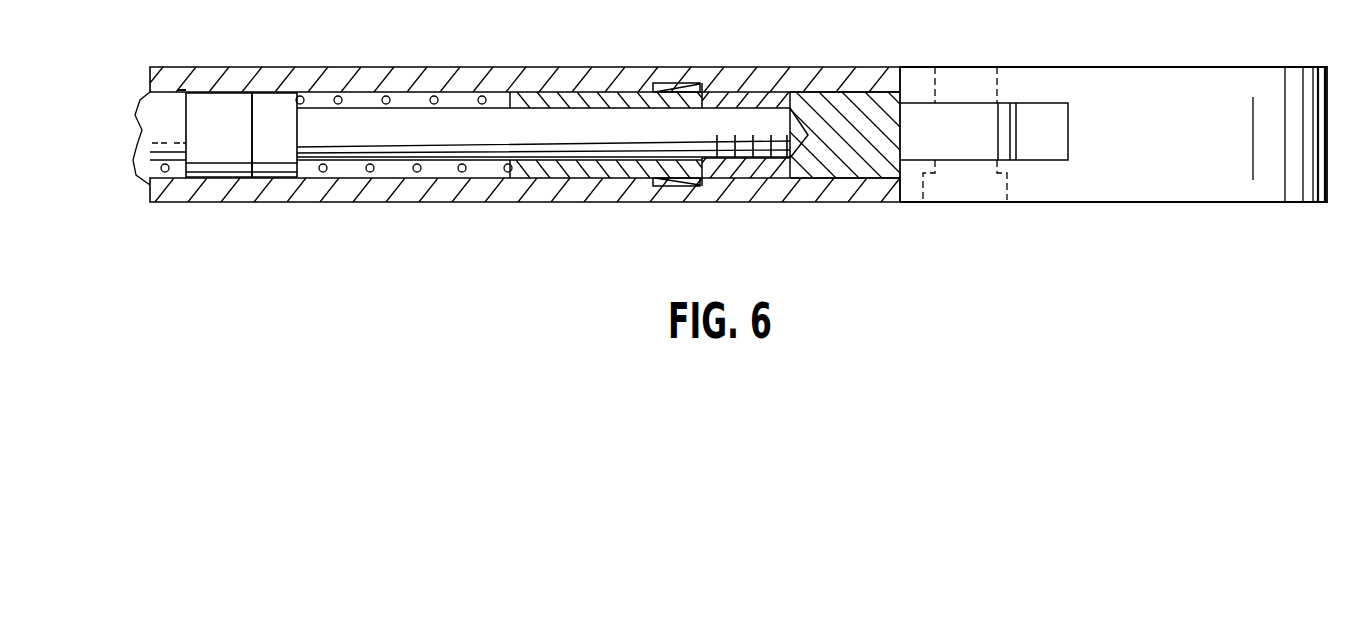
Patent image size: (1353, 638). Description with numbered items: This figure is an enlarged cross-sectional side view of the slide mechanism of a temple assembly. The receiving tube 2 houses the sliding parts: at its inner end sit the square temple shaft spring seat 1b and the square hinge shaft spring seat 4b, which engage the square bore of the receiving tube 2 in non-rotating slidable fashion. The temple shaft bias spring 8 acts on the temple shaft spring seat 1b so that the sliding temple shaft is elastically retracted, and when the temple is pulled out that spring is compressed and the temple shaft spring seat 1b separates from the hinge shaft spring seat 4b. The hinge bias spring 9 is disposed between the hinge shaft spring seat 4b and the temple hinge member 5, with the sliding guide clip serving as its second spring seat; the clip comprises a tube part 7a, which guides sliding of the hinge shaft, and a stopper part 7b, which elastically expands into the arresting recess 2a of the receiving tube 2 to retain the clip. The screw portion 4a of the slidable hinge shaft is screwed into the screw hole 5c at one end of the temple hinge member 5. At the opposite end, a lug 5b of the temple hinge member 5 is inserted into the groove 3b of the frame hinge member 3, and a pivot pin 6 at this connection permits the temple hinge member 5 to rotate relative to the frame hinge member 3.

The receiving tube 2 is at (418, 196).
The arresting recess 2a is at (656, 84).
The frame hinge member 3 is at (1150, 197).
The groove 3b is at (1010, 105).
The screw portion 4a is at (752, 114).
The hinge shaft spring seat 4b is at (290, 144).
The temple shaft spring seat 1b is at (226, 144).
The temple hinge member 5 is at (845, 110).
The lug 5b is at (948, 107).
The screw hole 5c is at (783, 163).
The pivot pin 6 is at (963, 192).
The tube part 7a is at (548, 172).
The stopper part 7b is at (688, 180).
The temple shaft bias spring 8 is at (183, 93).
The hinge bias spring 9 is at (325, 172).